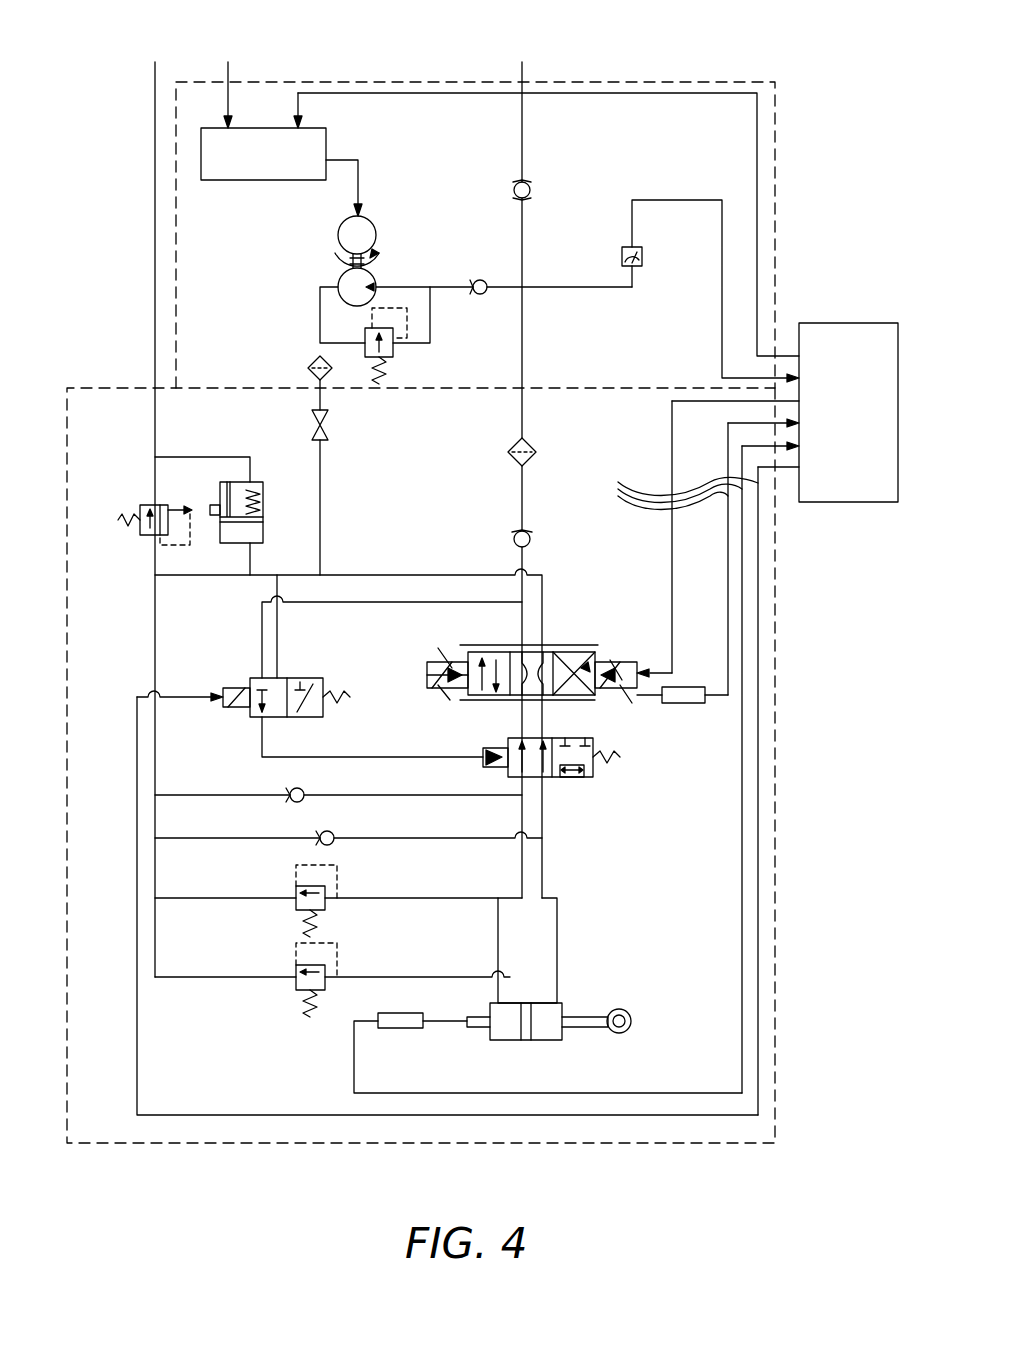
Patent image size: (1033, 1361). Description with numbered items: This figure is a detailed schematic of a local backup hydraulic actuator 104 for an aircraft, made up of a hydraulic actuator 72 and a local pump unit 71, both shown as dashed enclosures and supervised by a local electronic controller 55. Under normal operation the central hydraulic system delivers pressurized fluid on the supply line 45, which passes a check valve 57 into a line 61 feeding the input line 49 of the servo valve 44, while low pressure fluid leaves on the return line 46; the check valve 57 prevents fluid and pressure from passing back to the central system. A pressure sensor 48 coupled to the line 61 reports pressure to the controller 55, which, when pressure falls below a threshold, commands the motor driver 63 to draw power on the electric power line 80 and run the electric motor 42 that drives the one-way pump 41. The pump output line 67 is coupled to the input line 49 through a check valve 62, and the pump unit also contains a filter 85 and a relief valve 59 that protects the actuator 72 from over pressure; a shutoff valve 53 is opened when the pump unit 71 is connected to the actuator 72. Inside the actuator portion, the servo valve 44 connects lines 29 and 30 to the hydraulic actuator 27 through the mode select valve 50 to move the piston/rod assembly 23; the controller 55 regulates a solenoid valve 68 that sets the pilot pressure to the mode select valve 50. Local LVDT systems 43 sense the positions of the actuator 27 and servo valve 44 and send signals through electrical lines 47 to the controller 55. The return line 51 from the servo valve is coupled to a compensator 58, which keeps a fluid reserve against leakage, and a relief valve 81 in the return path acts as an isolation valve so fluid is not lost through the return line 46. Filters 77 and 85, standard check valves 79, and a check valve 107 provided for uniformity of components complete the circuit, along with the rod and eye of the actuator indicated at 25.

The local backup hydraulic actuator 104 is at (768, 48).
The electric power line 80 is at (232, 64).
The local pump unit 71 is at (480, 80).
The supply line 45 is at (522, 62).
The return line 46 is at (154, 160).
The motor driver 63 is at (262, 181).
The electric motor 42 is at (377, 237).
The pump 41 is at (345, 280).
The output line 67 is at (400, 287).
The check valve 62 is at (480, 278).
The check valve 57 is at (531, 190).
The pressure sensor 48 is at (642, 254).
The local electronic controller 55 is at (826, 322).
The line 61 is at (523, 332).
The filter 85 is at (312, 362).
The relief valve 59 is at (393, 352).
The hydraulic actuator 72 is at (66, 440).
The shutoff valve 53 is at (326, 432).
The compensator 58 is at (263, 490).
The relief valve 81 is at (146, 504).
The filter 77 is at (516, 446).
The check valve 107 is at (528, 546).
The electrical lines 47 is at (697, 758).
The return line 51 is at (424, 574).
The input line 49 is at (520, 626).
The solenoid valve 68 is at (310, 678).
The servo valve 44 is at (590, 650).
The LVDT systems 43 is at (688, 695).
The mode select valve 50 is at (600, 777).
The check valves 79 is at (302, 790).
The line 29 is at (498, 950).
The line 30 is at (560, 970).
The piston/rod assembly 23 is at (482, 1016).
The piston rod 25 is at (568, 1038).
The hydraulic actuator 27 is at (482, 1040).